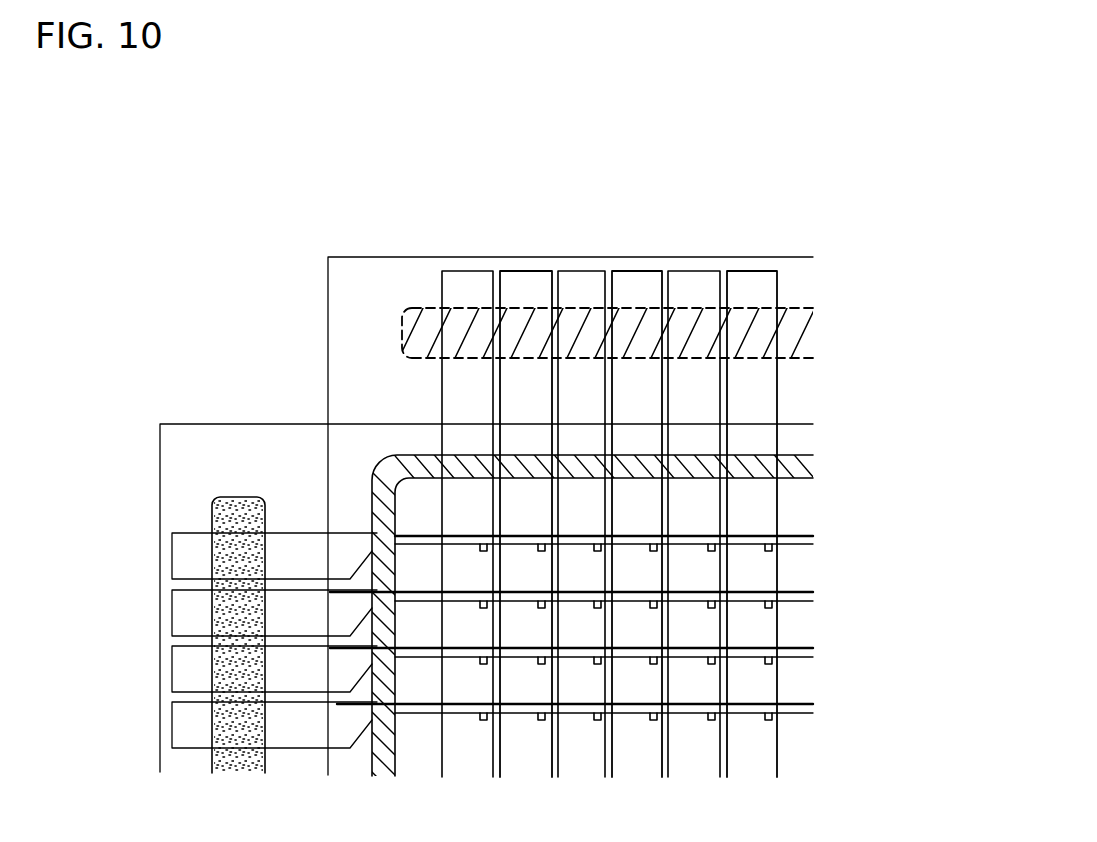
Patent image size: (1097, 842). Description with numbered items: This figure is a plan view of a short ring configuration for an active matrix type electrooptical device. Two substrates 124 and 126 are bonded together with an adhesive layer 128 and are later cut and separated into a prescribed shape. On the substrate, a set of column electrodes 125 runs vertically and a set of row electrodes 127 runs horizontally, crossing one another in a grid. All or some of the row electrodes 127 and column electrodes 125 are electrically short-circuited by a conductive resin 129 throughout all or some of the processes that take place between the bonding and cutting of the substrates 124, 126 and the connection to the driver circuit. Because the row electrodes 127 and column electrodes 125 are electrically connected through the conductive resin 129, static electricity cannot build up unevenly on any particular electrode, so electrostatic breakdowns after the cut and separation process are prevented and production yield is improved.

The substrate 124 is at (368, 272).
The column electrodes 125 is at (467, 275).
The substrate 126 is at (218, 437).
The row electrodes 127 is at (178, 565).
The adhesive layer 128 is at (385, 712).
The conductive resin 129 is at (690, 320).